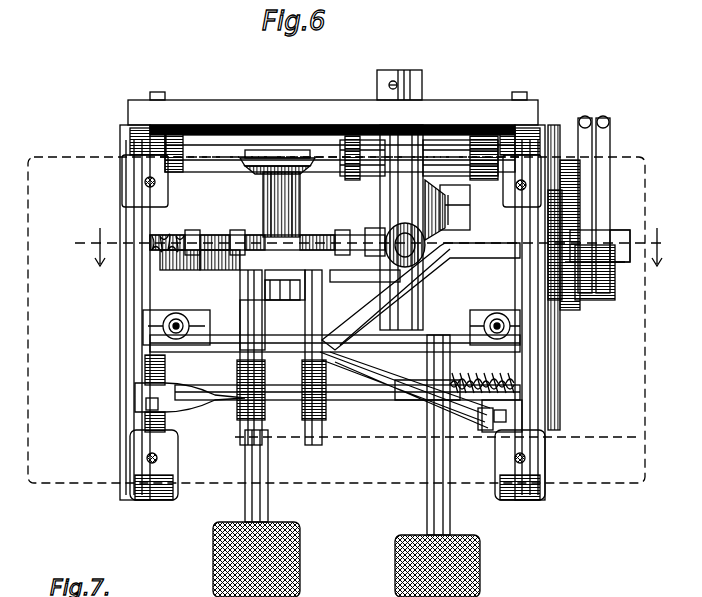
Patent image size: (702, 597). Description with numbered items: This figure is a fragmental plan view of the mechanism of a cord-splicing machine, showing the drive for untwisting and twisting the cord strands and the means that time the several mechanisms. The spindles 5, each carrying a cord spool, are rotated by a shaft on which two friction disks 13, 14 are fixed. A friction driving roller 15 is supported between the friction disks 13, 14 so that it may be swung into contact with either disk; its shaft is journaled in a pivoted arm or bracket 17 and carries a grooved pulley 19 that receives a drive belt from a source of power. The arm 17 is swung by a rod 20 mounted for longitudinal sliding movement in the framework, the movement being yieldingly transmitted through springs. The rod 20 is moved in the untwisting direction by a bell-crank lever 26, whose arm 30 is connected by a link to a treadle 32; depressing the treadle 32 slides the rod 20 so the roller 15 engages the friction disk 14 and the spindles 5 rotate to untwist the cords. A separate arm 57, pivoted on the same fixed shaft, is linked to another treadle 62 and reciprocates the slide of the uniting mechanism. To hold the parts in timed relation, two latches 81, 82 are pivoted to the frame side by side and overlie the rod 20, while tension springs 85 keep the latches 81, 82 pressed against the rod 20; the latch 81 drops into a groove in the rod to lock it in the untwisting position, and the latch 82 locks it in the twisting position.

The spindle 5 is at (177, 318).
The friction disk 13 is at (240, 298).
The friction disk 14 is at (312, 300).
The friction driving roller 15 is at (292, 288).
The arm or bracket 17 is at (290, 207).
The grooved pulley 19 is at (245, 155).
The rod 20 is at (200, 240).
The bell-crank lever 26 is at (380, 190).
The arm of bell-crank lever 30 is at (462, 210).
The treadle 32 is at (478, 576).
The arm 57 is at (432, 410).
The treadle 62 is at (298, 555).
The latch 81 is at (602, 222).
The latch 82 is at (587, 207).
The tension springs 85 is at (602, 116).